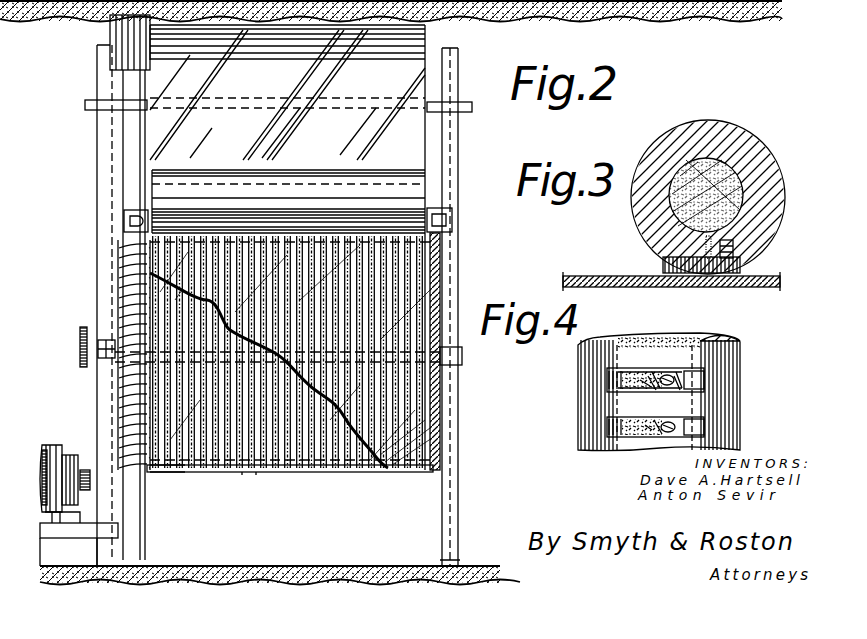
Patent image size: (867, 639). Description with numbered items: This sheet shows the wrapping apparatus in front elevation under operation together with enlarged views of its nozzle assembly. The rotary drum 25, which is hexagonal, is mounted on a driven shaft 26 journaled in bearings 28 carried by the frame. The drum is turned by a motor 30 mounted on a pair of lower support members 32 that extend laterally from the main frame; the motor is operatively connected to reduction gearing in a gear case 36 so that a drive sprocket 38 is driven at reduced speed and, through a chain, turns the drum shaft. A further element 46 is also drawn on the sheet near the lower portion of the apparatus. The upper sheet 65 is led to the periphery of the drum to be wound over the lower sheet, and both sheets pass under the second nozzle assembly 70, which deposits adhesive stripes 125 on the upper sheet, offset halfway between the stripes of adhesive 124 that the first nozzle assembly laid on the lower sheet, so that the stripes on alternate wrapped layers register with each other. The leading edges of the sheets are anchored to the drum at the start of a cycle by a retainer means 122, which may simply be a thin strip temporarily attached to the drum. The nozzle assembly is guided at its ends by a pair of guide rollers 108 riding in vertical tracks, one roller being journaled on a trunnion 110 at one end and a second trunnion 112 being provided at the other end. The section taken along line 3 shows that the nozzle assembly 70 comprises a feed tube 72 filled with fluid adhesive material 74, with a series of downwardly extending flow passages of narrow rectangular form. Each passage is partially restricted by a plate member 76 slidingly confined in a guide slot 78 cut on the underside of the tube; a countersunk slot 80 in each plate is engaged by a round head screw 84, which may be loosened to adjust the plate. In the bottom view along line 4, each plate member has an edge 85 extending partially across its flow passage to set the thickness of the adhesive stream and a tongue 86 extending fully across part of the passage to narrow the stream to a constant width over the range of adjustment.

In FIG. 2, the section line 3- 3 is at (244, 247).
In FIG. 3, the section line 4- 4 is at (797, 257).
In FIG. 2, the rotary drum 25 is at (210, 477).
In FIG. 2, the driven shaft 26 is at (122, 329).
In FIG. 2, the bearings 28 is at (458, 366).
In FIG. 2, the motor 30 is at (50, 445).
In FIG. 2, the lower support members 32 is at (58, 530).
In FIG. 2, the gear case 36 is at (69, 455).
In FIG. 2, the drive sprocket 38 is at (90, 482).
In FIG. 2, the bottom rail 46 is at (290, 472).
In FIG. 2, the upper sheet 65 is at (437, 270).
In FIG. 3, the nozzle assembly 70 is at (648, 145).
In FIG. 3, the feed tube 72 is at (672, 140).
In FIG. 4, the feed tube 72 is at (730, 362).
In FIG. 3, the fluid adhesive material 74 is at (672, 196).
In FIG. 3, the plate member 76 is at (736, 263).
In FIG. 4, the plate member 76 is at (700, 386).
In FIG. 3, the guide slot 78 is at (668, 268).
In FIG. 4, the guide slot 78 is at (636, 357).
In FIG. 3, the countersunk slot 80 is at (735, 280).
In FIG. 3, the round head screw 84 is at (714, 240).
In FIG. 4, the round head screw 84 is at (680, 348).
In FIG. 4, the edge 85 is at (666, 376).
In FIG. 4, the tongue 86 is at (654, 420).
In FIG. 2, the guide rollers 108 is at (452, 217).
In FIG. 2, the trunnion 110 is at (446, 214).
In FIG. 2, the second trunnion 112 is at (134, 207).
In FIG. 2, the retainer means 122 is at (160, 470).
In FIG. 2, the stripes of adhesive 124 is at (257, 472).
In FIG. 2, the stripes 125 is at (412, 460).